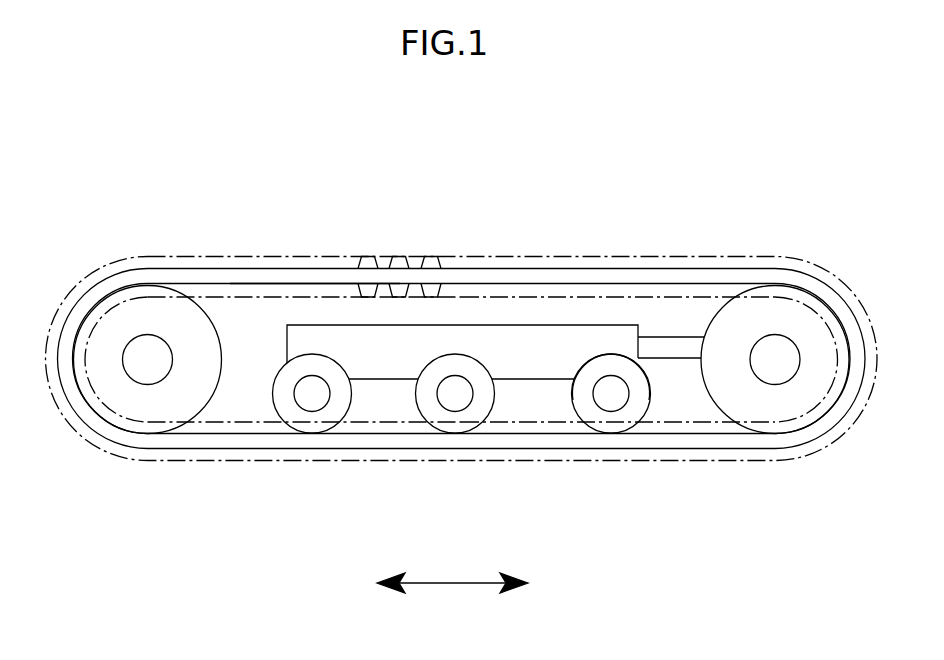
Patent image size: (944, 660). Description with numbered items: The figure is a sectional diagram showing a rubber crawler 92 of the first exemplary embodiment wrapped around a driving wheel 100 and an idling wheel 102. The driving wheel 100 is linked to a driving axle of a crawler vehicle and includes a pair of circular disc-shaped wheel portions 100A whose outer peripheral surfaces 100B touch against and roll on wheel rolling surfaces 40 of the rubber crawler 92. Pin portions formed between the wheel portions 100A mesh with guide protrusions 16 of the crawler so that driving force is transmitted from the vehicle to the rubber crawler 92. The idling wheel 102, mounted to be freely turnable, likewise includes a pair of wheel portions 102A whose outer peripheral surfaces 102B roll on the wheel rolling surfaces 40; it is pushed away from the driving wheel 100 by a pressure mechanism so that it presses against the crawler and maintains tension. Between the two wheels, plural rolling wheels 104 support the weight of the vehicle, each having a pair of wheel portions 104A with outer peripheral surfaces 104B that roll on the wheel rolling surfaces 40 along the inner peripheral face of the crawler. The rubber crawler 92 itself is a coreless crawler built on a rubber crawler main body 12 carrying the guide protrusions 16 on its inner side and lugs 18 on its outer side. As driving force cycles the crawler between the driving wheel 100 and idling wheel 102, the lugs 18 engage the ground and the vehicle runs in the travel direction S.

The rubber crawler main body 12 is at (567, 266).
The guide protrusions 16 is at (441, 293).
The lugs 18 is at (398, 256).
The wheel rolling surfaces 40 is at (309, 284).
The rubber crawler 92 is at (644, 254).
The driving wheel 100 is at (226, 336).
The wheel portions 100A is at (122, 302).
The outer peripheral surfaces 100B is at (221, 297).
The idling wheel 102 is at (707, 325).
The wheel portions 102A is at (787, 293).
The outer peripheral surfaces 102B is at (742, 297).
The rolling wheels 104 is at (314, 435).
The wheel portions 104A is at (573, 399).
The outer peripheral surfaces 104B is at (649, 399).
The belt travel direction S is at (452, 596).